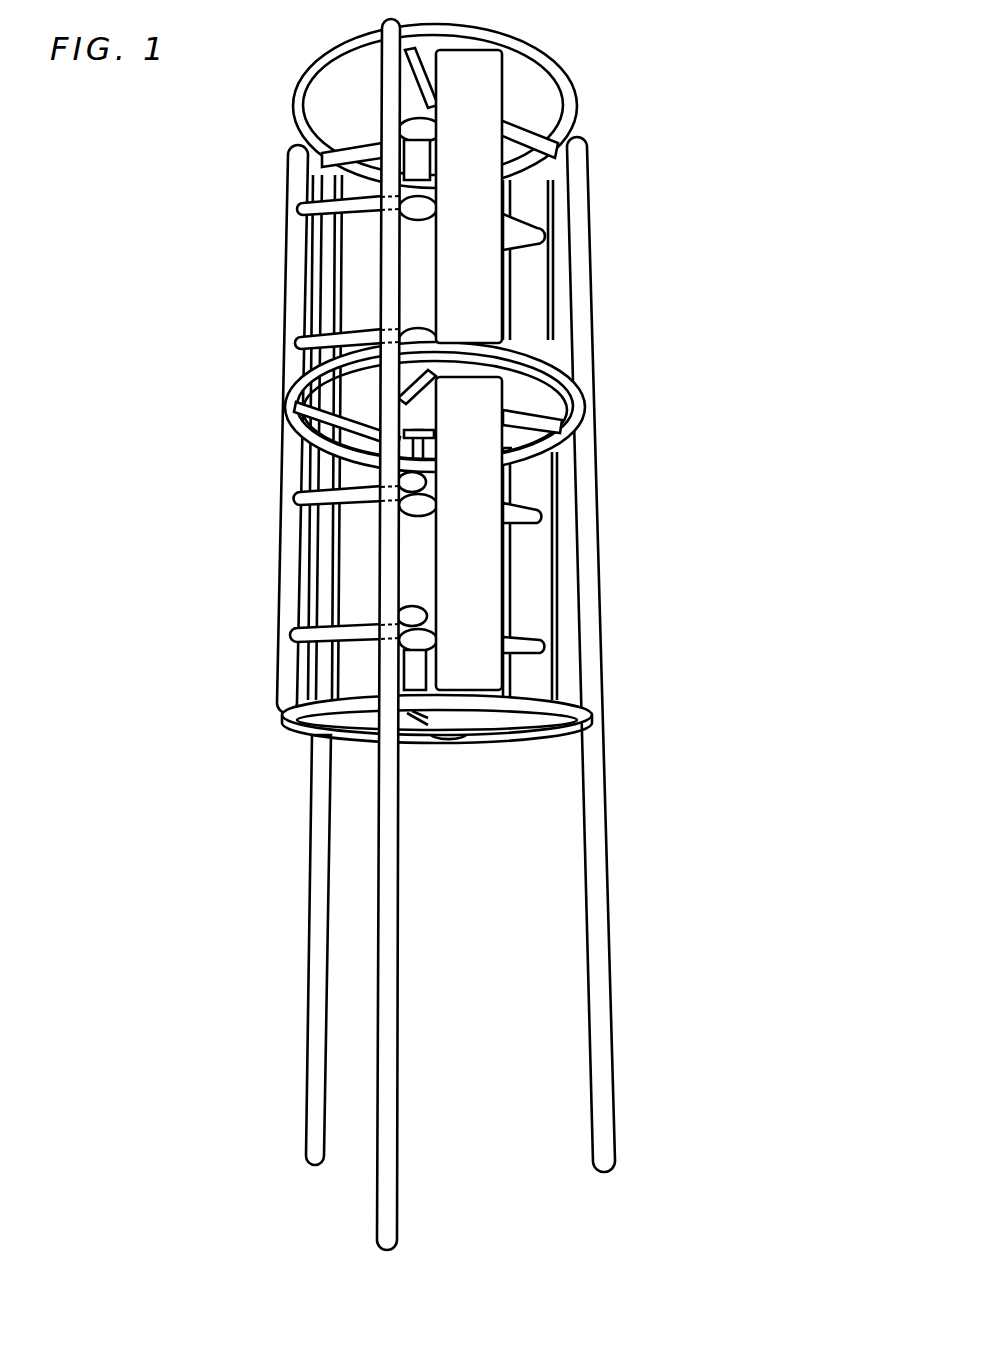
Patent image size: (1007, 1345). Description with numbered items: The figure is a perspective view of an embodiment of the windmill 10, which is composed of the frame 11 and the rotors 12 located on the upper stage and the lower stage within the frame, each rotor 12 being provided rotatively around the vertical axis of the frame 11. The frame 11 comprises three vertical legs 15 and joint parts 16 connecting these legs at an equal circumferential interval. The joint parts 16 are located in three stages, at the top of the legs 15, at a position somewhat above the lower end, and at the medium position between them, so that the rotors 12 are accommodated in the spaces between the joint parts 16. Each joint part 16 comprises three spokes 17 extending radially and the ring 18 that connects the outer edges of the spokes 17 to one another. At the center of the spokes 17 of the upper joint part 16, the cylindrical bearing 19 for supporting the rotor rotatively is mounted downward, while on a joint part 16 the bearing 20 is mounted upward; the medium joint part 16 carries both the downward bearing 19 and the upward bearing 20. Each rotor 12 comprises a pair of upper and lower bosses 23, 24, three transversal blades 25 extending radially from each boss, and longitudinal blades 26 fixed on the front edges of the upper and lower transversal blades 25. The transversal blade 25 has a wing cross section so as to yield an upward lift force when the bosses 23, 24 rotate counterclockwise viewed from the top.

The windmill 10 is at (475, 634).
The frame 11 is at (672, 318).
The rotor 12 is at (558, 248).
The vertical leg 15 is at (582, 450).
The joint part 16 is at (583, 385).
The spoke 17 is at (363, 432).
The ring 18 is at (303, 383).
The cylindrical bearing 19 is at (425, 443).
The bearing 20 is at (420, 678).
The upper boss 23 is at (400, 478).
The lower boss 24 is at (410, 613).
The transversal blade 25 is at (522, 647).
The longitudinal blade 26 is at (483, 600).